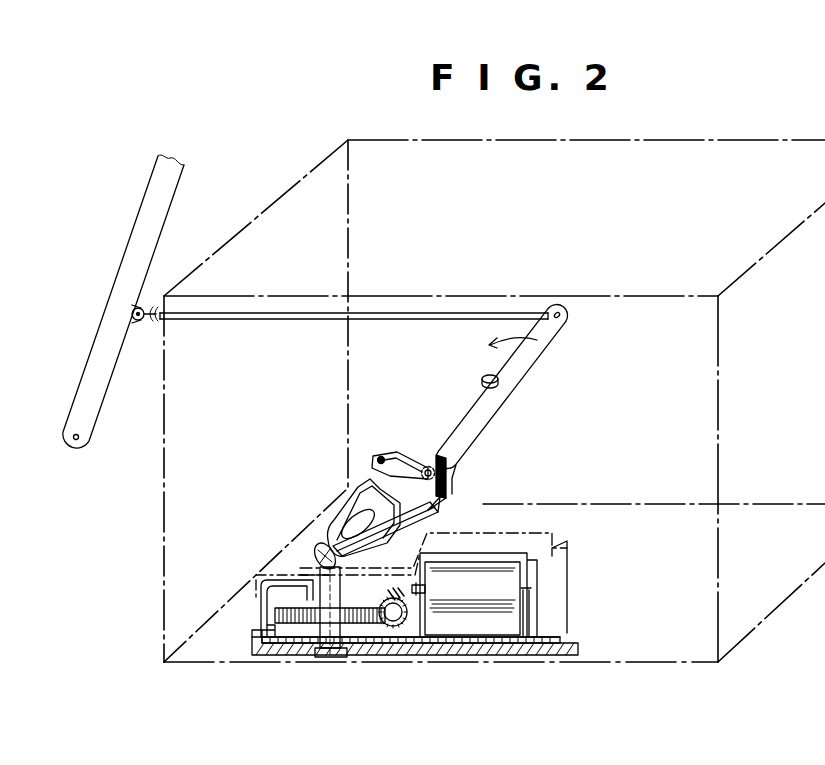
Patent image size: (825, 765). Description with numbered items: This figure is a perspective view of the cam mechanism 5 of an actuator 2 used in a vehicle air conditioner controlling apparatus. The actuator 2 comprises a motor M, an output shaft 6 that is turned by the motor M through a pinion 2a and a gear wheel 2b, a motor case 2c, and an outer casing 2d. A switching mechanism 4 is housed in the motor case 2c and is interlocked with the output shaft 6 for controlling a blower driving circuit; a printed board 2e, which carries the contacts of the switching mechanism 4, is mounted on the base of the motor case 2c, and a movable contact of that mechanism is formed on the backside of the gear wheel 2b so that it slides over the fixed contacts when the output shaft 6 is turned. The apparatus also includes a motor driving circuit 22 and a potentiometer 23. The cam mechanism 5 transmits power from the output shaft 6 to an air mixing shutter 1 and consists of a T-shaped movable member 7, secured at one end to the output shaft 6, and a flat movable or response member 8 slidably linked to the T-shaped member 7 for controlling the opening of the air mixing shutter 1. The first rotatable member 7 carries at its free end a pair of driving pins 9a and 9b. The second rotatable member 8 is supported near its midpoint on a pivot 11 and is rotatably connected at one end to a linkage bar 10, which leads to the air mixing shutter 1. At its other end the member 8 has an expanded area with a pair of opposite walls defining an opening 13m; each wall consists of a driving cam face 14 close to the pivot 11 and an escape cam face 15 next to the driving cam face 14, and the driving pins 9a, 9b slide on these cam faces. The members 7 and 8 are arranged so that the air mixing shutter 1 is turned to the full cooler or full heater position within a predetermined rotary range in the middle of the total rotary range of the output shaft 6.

The air mixing shutter 1 is at (150, 238).
The actuator 2 is at (640, 298).
The pinion 2a is at (395, 590).
The gear wheel 2b is at (302, 603).
The motor case 2c is at (538, 533).
The outer casing 2d is at (580, 298).
The printed board 2e is at (498, 628).
The switching mechanism 4 is at (278, 630).
The cam mechanism 5 is at (362, 424).
The output shaft 6 is at (320, 553).
The T-shaped movable member 7 is at (356, 508).
The flat movable member 8 is at (443, 420).
The driving pin 9a is at (381, 455).
The driving pin 9b is at (440, 460).
The linkage bar 10 is at (398, 312).
The pivot 11 is at (480, 380).
The opening 13m is at (402, 450).
The driving cam face 14 is at (362, 455).
The escape cam face 15 is at (348, 497).
The motor driving circuit 22 is at (334, 660).
The potentiometer 23 is at (383, 633).
The motor M is at (478, 568).